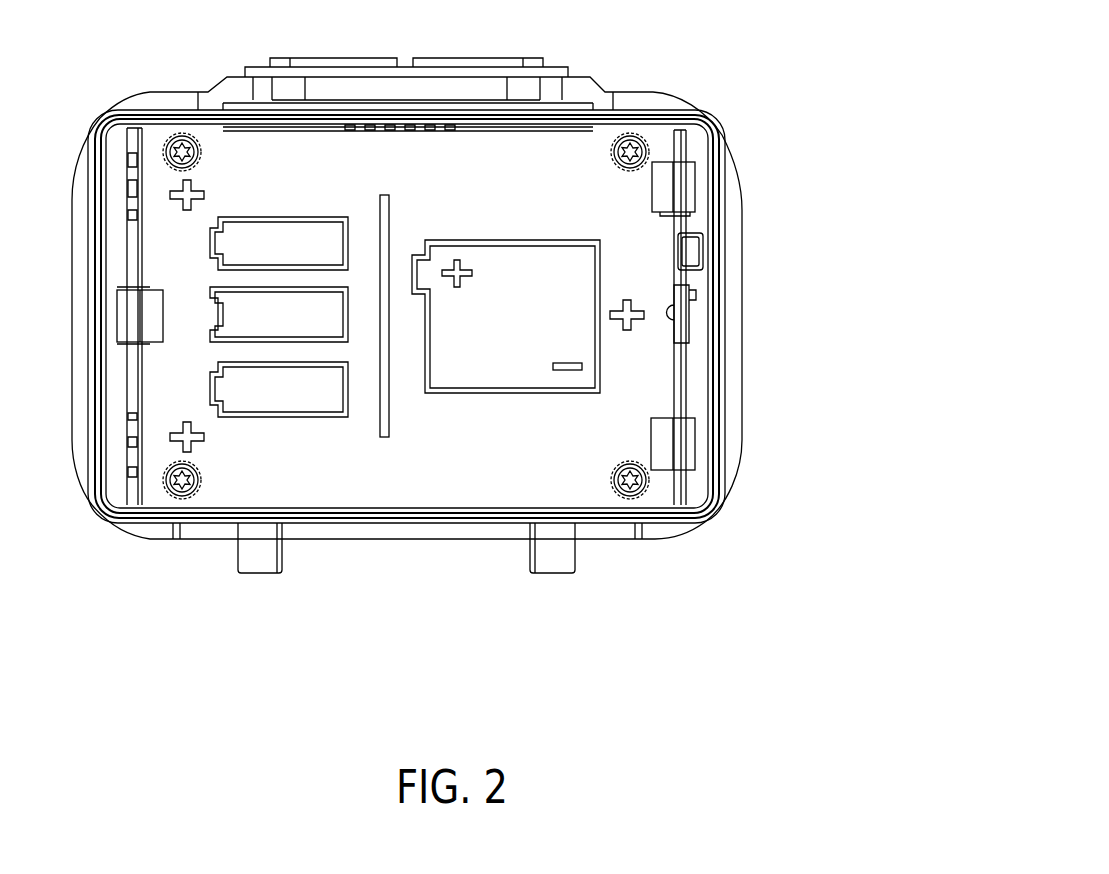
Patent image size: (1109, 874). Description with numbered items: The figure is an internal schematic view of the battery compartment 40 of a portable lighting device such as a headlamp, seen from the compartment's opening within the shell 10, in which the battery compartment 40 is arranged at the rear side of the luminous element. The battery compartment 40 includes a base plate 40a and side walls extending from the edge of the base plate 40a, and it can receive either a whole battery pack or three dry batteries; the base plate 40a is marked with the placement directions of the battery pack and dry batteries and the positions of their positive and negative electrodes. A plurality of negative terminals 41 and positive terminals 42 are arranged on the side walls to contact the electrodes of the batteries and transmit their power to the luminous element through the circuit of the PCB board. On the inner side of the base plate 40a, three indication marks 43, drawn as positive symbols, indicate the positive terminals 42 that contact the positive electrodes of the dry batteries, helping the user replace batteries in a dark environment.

The shell 10 is at (743, 355).
The battery compartment 40 is at (717, 467).
The base plate 40a is at (558, 172).
The negative terminals 41 is at (677, 210).
The positive terminals 42 is at (687, 312).
The indication marks 43 is at (625, 325).